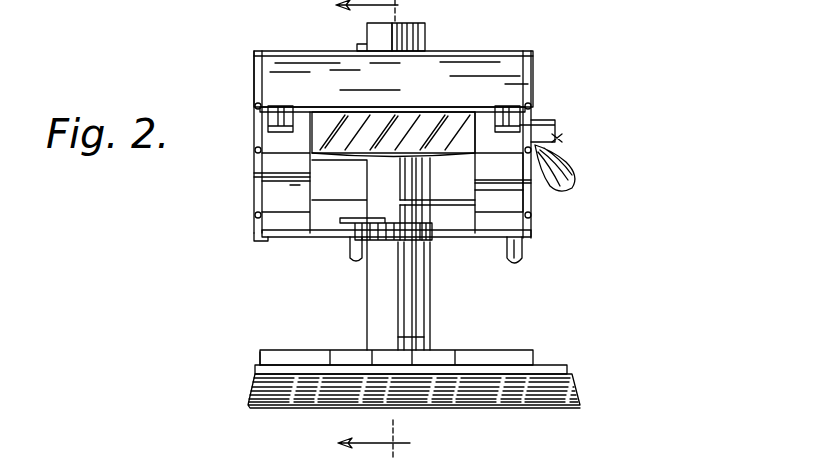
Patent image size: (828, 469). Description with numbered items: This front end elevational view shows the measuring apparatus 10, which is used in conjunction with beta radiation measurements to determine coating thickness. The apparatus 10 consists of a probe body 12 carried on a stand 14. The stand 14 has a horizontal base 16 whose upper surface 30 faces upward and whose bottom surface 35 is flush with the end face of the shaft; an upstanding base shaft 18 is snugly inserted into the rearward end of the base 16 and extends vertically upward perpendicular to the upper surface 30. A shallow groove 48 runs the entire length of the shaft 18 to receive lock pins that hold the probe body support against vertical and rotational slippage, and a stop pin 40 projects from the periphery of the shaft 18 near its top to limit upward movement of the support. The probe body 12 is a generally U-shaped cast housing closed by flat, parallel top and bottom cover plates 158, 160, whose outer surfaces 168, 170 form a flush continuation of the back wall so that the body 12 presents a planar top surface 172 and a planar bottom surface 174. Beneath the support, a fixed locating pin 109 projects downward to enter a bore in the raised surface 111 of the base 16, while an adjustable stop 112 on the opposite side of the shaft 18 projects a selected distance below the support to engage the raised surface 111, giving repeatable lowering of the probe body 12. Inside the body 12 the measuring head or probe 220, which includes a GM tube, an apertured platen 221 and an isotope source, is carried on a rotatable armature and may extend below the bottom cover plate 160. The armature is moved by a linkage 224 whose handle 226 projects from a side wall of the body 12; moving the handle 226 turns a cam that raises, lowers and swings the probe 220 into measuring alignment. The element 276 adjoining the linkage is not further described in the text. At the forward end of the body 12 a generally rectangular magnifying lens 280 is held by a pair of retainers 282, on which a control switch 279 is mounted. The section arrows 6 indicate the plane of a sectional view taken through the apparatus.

The section line 6 is at (379, 229).
The measuring apparatus 10 is at (558, 92).
The probe body 12 is at (206, 56).
The stand 14 is at (434, 346).
The horizontal base 16 is at (578, 386).
The base shaft 18 is at (367, 291).
The upper surface 30 is at (260, 356).
The bottom surface 35 is at (576, 412).
The stop pin 40 is at (360, 47).
The shallow groove 48 is at (396, 318).
The fixed locating pin 109 is at (524, 252).
The raised surface 111 is at (278, 350).
The adjustable stop 112 is at (350, 252).
The top cover plate 158 is at (503, 60).
The bottom cover plate 160 is at (257, 238).
The outer surface of top cover plate 168 is at (460, 56).
The outer surface of bottom cover plate 170 is at (278, 246).
The top surface 172 is at (440, 51).
The bottom surface 174 is at (458, 240).
The measuring head 220 is at (377, 178).
The apertured platen 221 is at (385, 246).
The linkage 224 is at (562, 140).
The handle 226 is at (566, 152).
The bracket 276 is at (556, 124).
The control switch 279 is at (268, 121).
The magnifying lens 280 is at (397, 112).
The retainers 282 is at (262, 142).